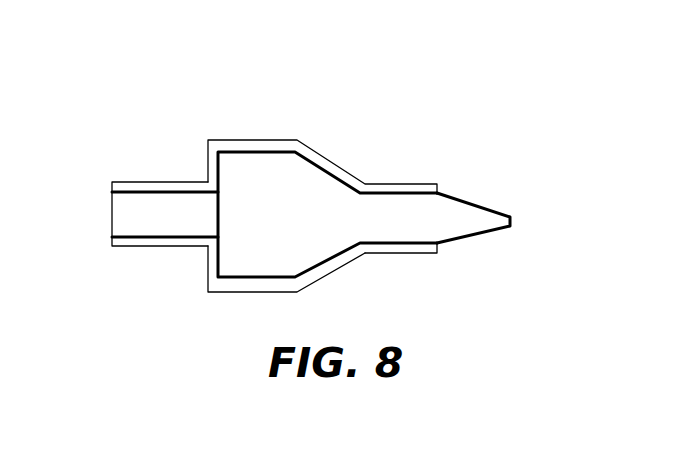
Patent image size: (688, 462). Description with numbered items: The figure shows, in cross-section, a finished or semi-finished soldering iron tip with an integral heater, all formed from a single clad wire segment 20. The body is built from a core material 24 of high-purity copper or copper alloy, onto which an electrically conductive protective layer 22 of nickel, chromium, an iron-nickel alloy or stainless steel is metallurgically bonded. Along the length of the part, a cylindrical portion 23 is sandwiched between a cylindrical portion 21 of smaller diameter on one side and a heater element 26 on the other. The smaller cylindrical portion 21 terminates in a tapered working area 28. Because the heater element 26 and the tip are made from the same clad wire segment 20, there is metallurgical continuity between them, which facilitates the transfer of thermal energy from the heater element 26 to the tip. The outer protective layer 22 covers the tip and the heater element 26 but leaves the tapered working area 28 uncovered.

The clad wire segment 20 is at (436, 133).
The cylindrical portion of smaller diameter 21 is at (415, 253).
The protective layer 22 is at (232, 145).
The cylindrical portion 23 is at (268, 293).
The core material 24 is at (228, 261).
The heater element 26 is at (127, 223).
The tapered working area 28 is at (488, 205).